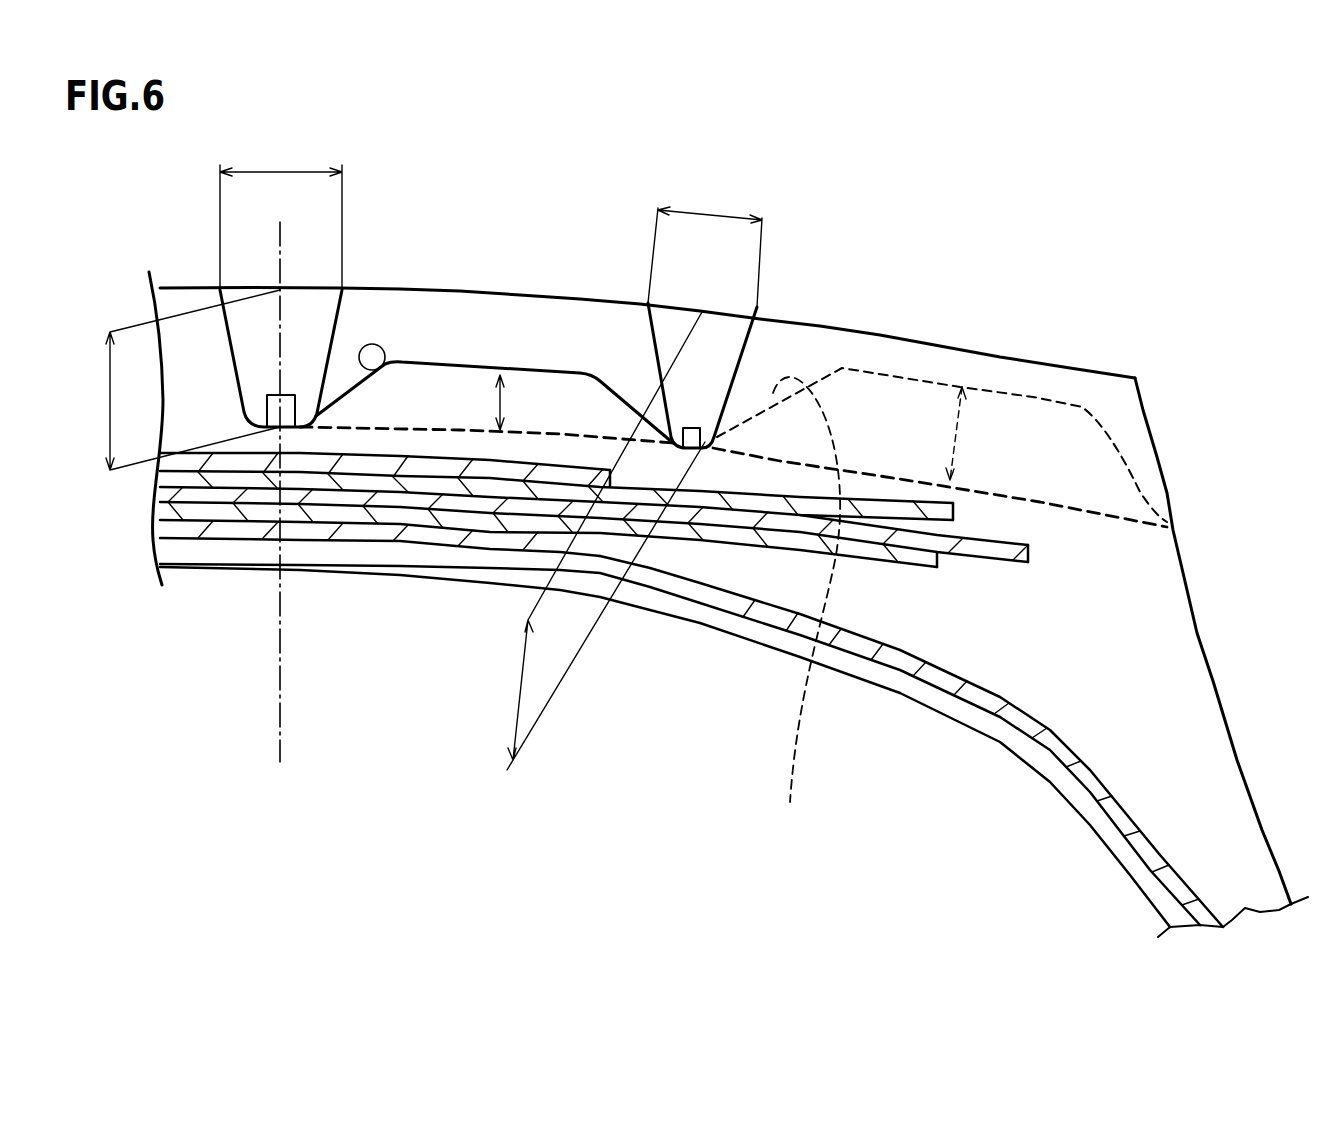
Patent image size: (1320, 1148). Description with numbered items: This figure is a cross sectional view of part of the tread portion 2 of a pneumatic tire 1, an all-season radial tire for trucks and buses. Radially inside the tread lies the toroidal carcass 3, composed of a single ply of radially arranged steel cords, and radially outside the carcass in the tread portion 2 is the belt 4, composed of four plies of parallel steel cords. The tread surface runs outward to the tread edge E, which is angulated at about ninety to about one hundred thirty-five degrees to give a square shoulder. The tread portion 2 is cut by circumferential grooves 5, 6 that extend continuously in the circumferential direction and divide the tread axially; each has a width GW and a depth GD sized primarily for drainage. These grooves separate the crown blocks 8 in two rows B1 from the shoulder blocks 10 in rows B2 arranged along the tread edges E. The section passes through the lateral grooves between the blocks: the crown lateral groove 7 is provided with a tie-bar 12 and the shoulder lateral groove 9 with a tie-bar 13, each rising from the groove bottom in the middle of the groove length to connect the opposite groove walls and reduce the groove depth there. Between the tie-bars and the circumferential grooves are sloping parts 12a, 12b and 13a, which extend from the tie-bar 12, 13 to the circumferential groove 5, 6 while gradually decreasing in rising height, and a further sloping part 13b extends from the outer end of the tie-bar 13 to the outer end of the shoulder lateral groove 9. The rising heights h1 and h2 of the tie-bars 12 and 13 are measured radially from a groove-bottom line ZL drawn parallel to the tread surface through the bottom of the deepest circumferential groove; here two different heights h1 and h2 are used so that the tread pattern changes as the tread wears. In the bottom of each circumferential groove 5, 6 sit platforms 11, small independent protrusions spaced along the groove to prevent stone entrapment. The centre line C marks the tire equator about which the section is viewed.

The pneumatic tire 1 is at (1181, 410).
The tread portion 2 is at (970, 307).
The carcass 3 is at (1030, 742).
The belt 4 is at (795, 558).
The circumferential groove 5 is at (307, 318).
The circumferential groove 6 is at (722, 350).
The crown lateral groove 7 is at (537, 338).
The crown block 8 is at (383, 310).
The shoulder lateral groove 9 is at (1003, 385).
The shoulder block 10 is at (795, 343).
The platform 11 is at (294, 397).
The tie-bar 12 is at (470, 363).
The sloping part 12a is at (384, 367).
The sloping part 12b is at (627, 405).
The tie-bar 13 is at (1037, 397).
The sloping part 13a is at (801, 607).
The sloping part 13b is at (1115, 455).
The crown block row B1 is at (505, 288).
The shoulder block row B2 is at (872, 303).
The tire equator (center line) C is at (279, 479).
The tread edge E is at (1135, 378).
The groove-bottom line ZL is at (1062, 503).
The groove width GW is at (491, 225).
The groove depth GD is at (398, 530).
The rising height h1 is at (520, 402).
The rising height h2 is at (973, 433).